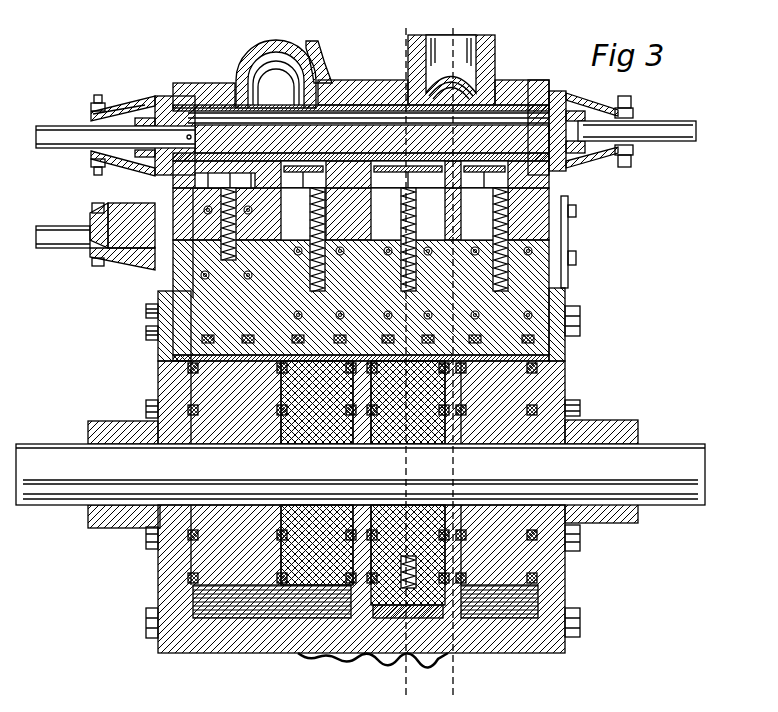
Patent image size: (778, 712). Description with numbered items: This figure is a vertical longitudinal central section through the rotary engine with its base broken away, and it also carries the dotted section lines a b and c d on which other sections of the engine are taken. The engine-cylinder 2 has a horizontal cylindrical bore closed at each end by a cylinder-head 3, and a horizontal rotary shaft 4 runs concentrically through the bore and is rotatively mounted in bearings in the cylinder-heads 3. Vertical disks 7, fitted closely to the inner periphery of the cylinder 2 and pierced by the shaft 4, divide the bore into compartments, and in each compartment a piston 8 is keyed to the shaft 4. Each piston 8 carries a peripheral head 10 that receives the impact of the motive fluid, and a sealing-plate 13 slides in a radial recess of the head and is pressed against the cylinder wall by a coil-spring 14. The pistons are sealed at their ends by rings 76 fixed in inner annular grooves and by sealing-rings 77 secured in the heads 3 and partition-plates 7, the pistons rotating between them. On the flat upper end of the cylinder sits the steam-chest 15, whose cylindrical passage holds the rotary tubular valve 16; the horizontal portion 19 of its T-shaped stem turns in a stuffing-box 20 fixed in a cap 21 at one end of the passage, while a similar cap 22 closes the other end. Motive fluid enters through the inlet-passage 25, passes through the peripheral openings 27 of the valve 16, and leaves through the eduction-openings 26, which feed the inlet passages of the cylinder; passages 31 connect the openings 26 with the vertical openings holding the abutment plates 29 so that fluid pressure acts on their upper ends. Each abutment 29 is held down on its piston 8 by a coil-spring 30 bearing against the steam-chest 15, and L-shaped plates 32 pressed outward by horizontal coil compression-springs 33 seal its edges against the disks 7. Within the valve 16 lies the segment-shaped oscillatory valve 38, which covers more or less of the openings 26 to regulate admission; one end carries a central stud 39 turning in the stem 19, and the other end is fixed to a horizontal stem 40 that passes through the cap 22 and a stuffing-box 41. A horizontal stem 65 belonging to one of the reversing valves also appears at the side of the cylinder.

The engine-cylinder 2 is at (262, 645).
The cylinder-heads 3 is at (560, 545).
The horizontal rotary shaft 4 is at (360, 474).
The vertical disks 7 is at (300, 645).
The pistons 8 is at (387, 440).
The peripheral head 10 is at (165, 348).
The sealing-plate 13 is at (150, 325).
The coil-spring 14 is at (180, 372).
The steam-chest 15 is at (372, 76).
The tubular valve 16 is at (312, 60).
The horizontal portion of valve-stem 19 is at (658, 126).
The stuffing-box 20 is at (575, 160).
The cap 21 is at (552, 88).
The cap 22 is at (150, 92).
The inlet-passage 25 is at (276, 74).
The eduction-openings 26 is at (345, 175).
The openings 27 is at (383, 70).
The plates 29 is at (388, 232).
The coil-spring 30 is at (394, 214).
The passages 31 is at (305, 104).
The L-shaped plates 32 is at (138, 320).
The horizontal coil compression-springs 33 is at (150, 296).
The oscillatory valve 38 is at (203, 76).
The central stud 39 is at (560, 170).
The horizontal stem 40 is at (62, 118).
The stuffing-box 41 is at (120, 97).
The horizontal stem 65 is at (62, 240).
The ring 76 is at (138, 400).
The sealing-rings 77 is at (545, 350).
The dotted line a b a is at (451, 59).
The dotted line a b is at (451, 370).
The dotted line c d c is at (386, 40).
The dotted line c d is at (405, 370).